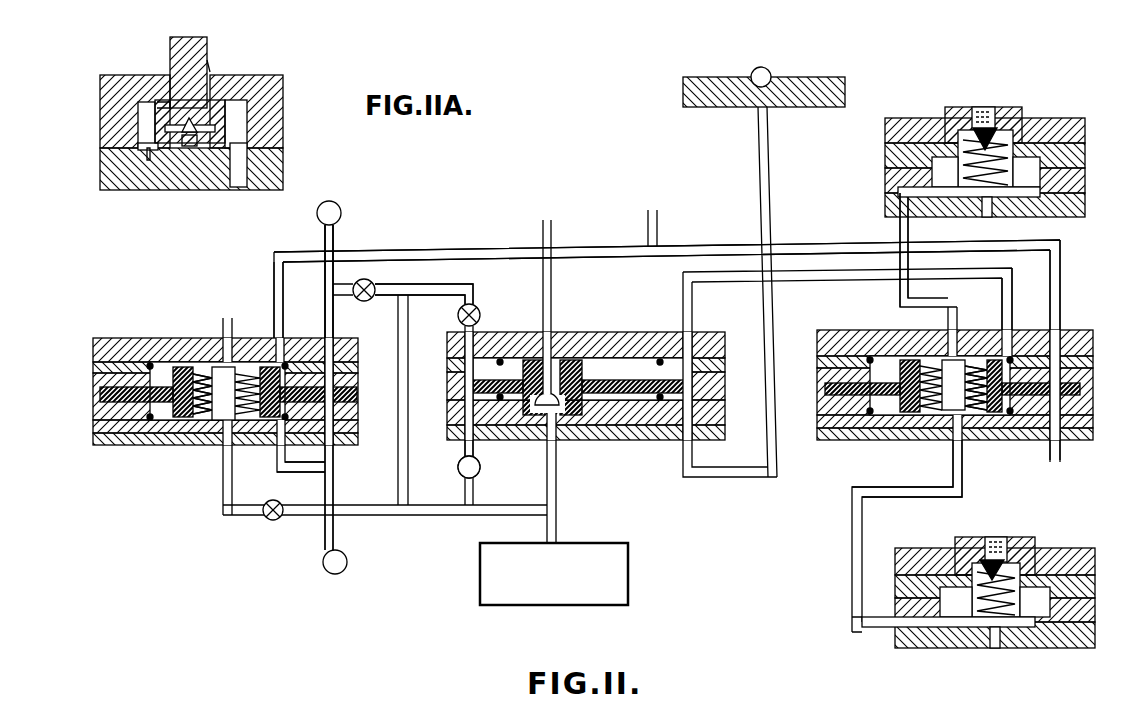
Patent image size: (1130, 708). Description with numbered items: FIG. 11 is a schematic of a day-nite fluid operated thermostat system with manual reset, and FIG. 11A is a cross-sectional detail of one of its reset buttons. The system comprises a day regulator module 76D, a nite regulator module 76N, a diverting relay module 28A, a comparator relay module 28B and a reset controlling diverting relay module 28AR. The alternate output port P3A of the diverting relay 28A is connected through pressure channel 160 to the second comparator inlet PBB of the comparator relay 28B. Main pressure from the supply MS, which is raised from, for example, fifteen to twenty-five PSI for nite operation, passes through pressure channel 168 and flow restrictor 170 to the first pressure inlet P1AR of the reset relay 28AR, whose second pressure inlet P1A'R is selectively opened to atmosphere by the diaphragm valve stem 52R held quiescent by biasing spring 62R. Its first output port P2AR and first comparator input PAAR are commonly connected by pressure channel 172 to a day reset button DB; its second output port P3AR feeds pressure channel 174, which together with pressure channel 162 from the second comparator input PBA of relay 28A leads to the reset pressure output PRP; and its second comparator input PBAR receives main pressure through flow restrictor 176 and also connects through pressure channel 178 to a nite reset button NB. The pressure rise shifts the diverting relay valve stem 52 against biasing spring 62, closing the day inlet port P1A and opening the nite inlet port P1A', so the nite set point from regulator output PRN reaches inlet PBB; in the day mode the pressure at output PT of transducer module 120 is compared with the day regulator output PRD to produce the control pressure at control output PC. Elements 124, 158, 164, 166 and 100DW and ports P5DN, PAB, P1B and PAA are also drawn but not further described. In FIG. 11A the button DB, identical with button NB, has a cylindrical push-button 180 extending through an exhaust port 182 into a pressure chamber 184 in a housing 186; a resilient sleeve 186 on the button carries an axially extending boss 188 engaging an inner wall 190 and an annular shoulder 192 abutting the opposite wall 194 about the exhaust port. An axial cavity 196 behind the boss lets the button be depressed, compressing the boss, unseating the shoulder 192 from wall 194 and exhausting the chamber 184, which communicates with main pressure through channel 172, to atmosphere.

In FIG. 11, the transducer module 120 is at (840, 60).
In FIG. 11, the valve 124 is at (482, 475).
In FIG. 11, the conduit loop 158 is at (723, 478).
In FIG. 11, the pressure channel 160 is at (825, 283).
In FIG. 11, the pressure channel 162 is at (669, 250).
In FIG. 11, the conduit 164 is at (852, 576).
In FIG. 11, the conduit 166 is at (910, 235).
In FIG. 11, the pressure channel 168 is at (413, 337).
In FIG. 11, the flow restrictor 170 is at (268, 521).
In FIG. 11A, the pressure channel 172 is at (240, 170).
In FIG. 11, the pressure channel 172 is at (326, 538).
In FIG. 11, the pressure channel 174 is at (418, 250).
In FIG. 11, the flow restrictor 176 is at (354, 302).
In FIG. 11, the pressure channel 178 is at (333, 272).
In FIG. 11A, the cylindrical push-button 180 is at (207, 45).
In FIG. 11A, the exhaust port 182 is at (213, 65).
In FIG. 11A, the pressure chamber 184 is at (240, 118).
In FIG. 11A, the housing / resilient sleeve 186 is at (108, 75).
In FIG. 11A, the resilient boss 188 is at (189, 150).
In FIG. 11A, the inner wall 190 is at (150, 165).
In FIG. 11A, the annular resilient shoulder 192 is at (162, 100).
In FIG. 11A, the opposite wall 194 is at (245, 73).
In FIG. 11A, the axial cavity 196 is at (227, 130).
In FIG. 11, the diverting relay module 28A is at (1047, 478).
In FIG. 11, the reset controlling diverting relay module 28AR is at (160, 494).
In FIG. 11, the comparator relay module 28B is at (645, 462).
In FIG. 11, the diverting relay valve stem 52 is at (956, 402).
In FIG. 11, the diaphragm valve stem 52R is at (225, 410).
In FIG. 11, the biasing spring 62 is at (963, 405).
In FIG. 11, the biasing spring 62R is at (196, 420).
In FIG. 11, the nite regulator module 76N is at (866, 166).
In FIG. 11, the day regulator module 76D is at (1025, 683).
In FIG. 11, the conduit 100DW is at (477, 297).
In FIG. 11, the main pressure supply MS is at (678, 583).
In FIG. 11, the nite reset button NB is at (341, 204).
In FIG. 11A, the day reset button DB is at (254, 9).
In FIG. 11, the day reset button DB is at (324, 569).
In FIG. 11, the reset pressure output PRP is at (655, 213).
In FIG. 11, the nite regulator output PRN is at (897, 226).
In FIG. 11, the day regulator output PRD is at (882, 632).
In FIG. 11, the comparator relay control output PC is at (553, 328).
In FIG. 11, the transducer output PT is at (483, 458).
In FIG. 11, the second comparator inlet PBB is at (683, 288).
In FIG. 11, the pressure port PAB is at (466, 435).
In FIG. 11, the pressure port P1B is at (557, 462).
In FIG. 11, the pressure port P5DN is at (481, 315).
In FIG. 11, the second comparator input PBAR is at (328, 305).
In FIG. 11, the second pressure output port P3AR is at (277, 337).
In FIG. 11, the second pressure inlet P1A'R is at (182, 324).
In FIG. 11, the first pressure inlet P1AR is at (233, 447).
In FIG. 11, the first pressure output port P2AR is at (334, 478).
In FIG. 11, the first comparator input PAAR is at (335, 455).
In FIG. 11, the second (nite) inlet port P1A' is at (965, 307).
In FIG. 11, the first (day) inlet port P1A is at (907, 468).
In FIG. 11, the alternate output port P3A is at (1013, 328).
In FIG. 11, the second comparator input PBA is at (1062, 328).
In FIG. 11, the pressure port PAA is at (1067, 447).